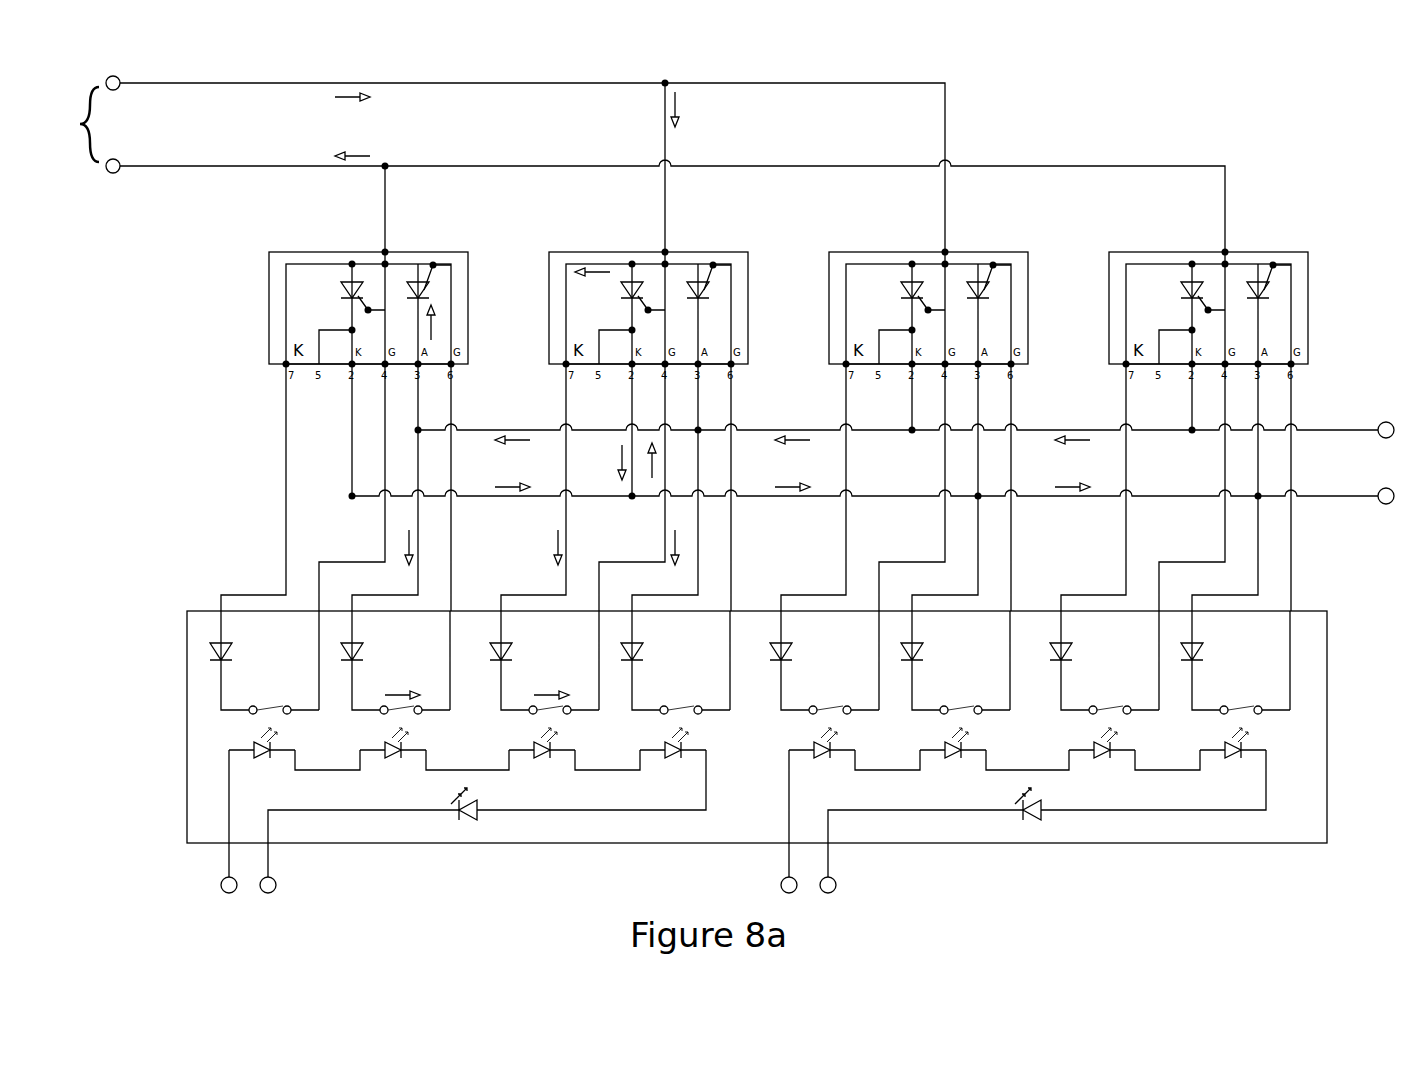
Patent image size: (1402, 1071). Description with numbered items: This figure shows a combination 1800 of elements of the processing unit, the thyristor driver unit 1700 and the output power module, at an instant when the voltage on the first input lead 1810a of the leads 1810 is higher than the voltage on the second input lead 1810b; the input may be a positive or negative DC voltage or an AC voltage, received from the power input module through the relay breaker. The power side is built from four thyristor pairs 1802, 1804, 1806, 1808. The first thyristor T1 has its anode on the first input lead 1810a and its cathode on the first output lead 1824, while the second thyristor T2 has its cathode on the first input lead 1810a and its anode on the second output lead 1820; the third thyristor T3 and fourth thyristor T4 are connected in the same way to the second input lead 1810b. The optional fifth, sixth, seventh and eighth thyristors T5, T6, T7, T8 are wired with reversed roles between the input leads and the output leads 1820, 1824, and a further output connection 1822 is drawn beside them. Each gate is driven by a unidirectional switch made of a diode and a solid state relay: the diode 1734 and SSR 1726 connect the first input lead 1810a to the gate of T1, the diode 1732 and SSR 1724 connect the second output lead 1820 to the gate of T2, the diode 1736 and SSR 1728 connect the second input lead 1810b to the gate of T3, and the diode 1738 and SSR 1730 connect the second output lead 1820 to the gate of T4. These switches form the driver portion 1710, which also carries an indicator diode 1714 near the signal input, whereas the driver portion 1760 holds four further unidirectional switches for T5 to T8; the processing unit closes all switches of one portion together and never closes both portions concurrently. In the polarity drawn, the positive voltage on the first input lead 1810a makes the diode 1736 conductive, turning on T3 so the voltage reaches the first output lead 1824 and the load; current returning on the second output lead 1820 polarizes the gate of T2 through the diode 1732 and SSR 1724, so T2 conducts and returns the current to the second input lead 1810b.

The combination of processing unit, thyristor driver unit and output power module 1800 is at (1218, 90).
The leads 1810 is at (125, 129).
The first input lead 1810a is at (118, 78).
The second input lead 1810b is at (118, 172).
The thyristor pair 1802 is at (300, 252).
The thyristor pair 1804 is at (580, 252).
The thyristor pair 1806 is at (860, 252).
The thyristor pair 1808 is at (1140, 252).
The first thyristor T1 is at (342, 292).
The second thyristor T2 is at (406, 292).
The third thyristor T3 is at (622, 292).
The fourth thyristor T4 is at (686, 292).
The fifth thyristor T5 is at (902, 292).
The sixth thyristor T6 is at (966, 292).
The seventh thyristor T7 is at (1182, 292).
The eighth thyristor T8 is at (1246, 292).
The second output lead 1820 is at (1378, 424).
The second output bus line 1822 is at (1378, 490).
The first output lead 1824 is at (1378, 506).
The thyristor driver unit 1700 is at (187, 682).
The driver portion 1710 is at (408, 843).
The driver portion 1760 is at (993, 843).
The light emitting diode 1714 is at (476, 803).
The SSR 1724 is at (384, 693).
The SSR 1726 is at (253, 693).
The SSR 1728 is at (533, 693).
The SSR 1730 is at (665, 693).
The diode 1732 is at (362, 642).
The diode 1734 is at (231, 642).
The diode 1736 is at (511, 642).
The diode 1738 is at (643, 642).